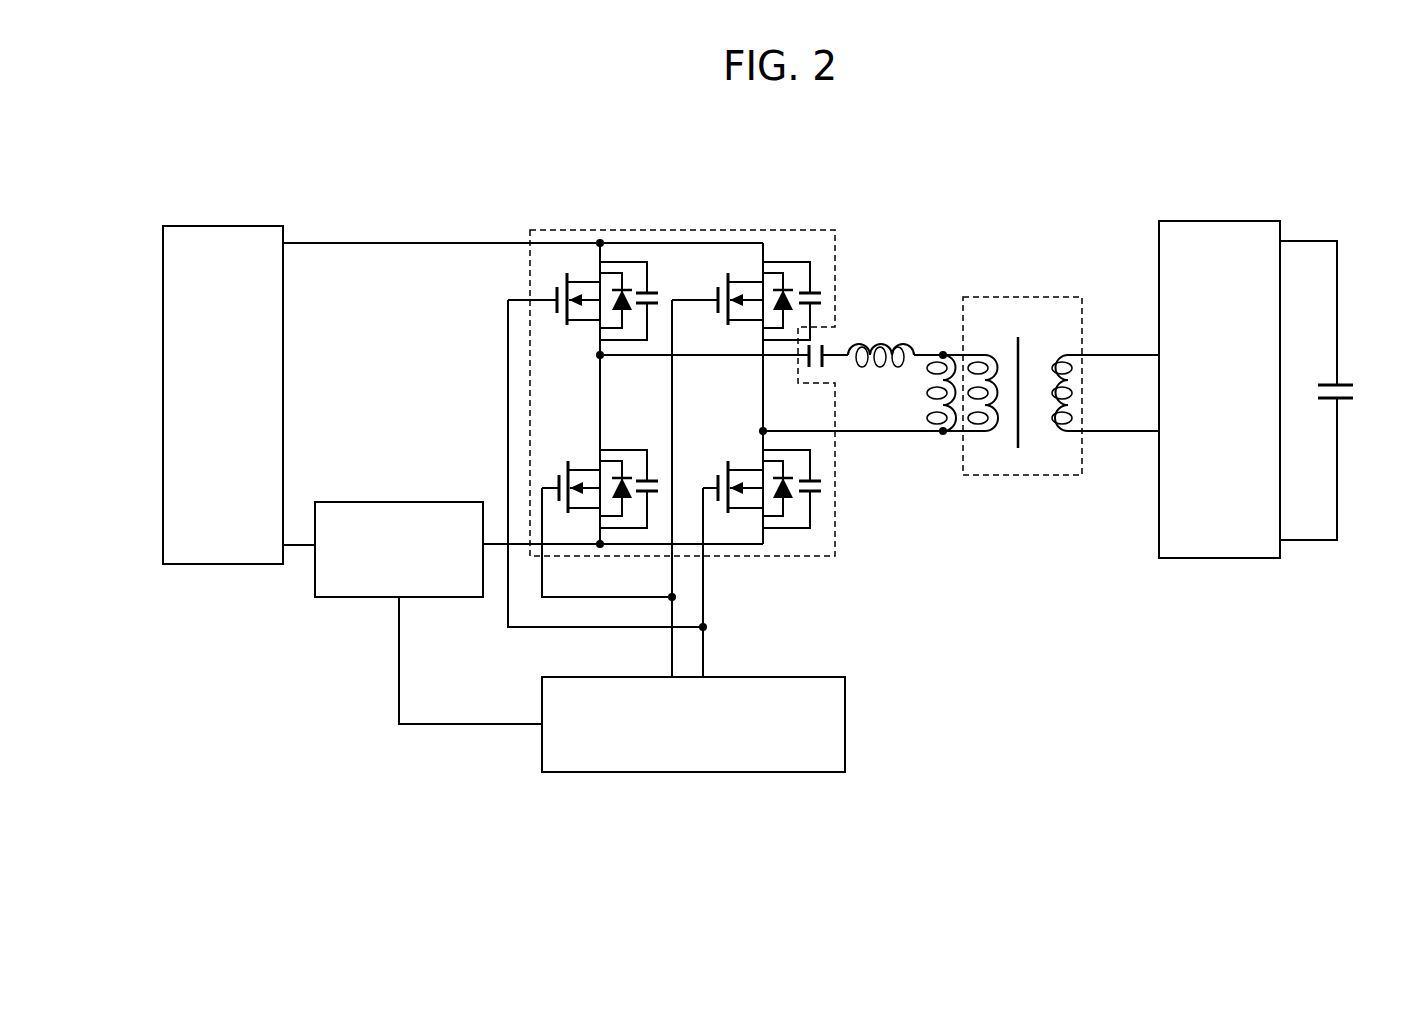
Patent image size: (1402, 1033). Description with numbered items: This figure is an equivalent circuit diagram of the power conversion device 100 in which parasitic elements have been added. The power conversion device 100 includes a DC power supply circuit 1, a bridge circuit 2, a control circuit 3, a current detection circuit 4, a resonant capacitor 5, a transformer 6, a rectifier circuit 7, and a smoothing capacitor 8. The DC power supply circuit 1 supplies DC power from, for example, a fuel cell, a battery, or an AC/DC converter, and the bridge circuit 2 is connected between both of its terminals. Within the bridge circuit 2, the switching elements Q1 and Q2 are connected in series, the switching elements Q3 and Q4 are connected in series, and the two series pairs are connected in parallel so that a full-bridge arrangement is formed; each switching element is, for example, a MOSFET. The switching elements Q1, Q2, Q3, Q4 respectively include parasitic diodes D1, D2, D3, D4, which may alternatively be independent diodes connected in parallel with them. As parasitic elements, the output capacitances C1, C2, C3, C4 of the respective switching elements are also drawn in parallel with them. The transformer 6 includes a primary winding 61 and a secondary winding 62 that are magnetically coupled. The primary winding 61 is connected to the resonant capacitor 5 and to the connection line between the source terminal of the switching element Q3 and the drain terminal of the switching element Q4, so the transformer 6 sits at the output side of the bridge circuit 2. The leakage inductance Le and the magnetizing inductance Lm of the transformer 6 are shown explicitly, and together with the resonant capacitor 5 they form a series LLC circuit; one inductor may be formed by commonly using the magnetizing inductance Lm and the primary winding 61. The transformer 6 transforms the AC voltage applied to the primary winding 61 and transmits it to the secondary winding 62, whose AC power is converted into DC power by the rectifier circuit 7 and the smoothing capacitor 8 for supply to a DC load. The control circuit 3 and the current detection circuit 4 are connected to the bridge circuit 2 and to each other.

The DC power supply circuit 1 is at (222, 226).
The bridge circuit 2 is at (735, 557).
The control circuit 3 is at (763, 677).
The current detection circuit 4 is at (399, 502).
The resonant capacitor 5 is at (823, 352).
The transformer 6 is at (1012, 356).
The primary winding 61 is at (985, 355).
The secondary winding 62 is at (1064, 355).
The rectifier circuit 7 is at (1223, 221).
The smoothing capacitor 8 is at (1346, 383).
The power conversion device 100 is at (1061, 690).
The switching element Q1 is at (554, 309).
The switching element Q2 is at (569, 480).
The switching element Q3 is at (717, 292).
The switching element Q4 is at (730, 480).
The parasitic diode D1 is at (623, 288).
The parasitic diode D2 is at (623, 476).
The parasitic diode D3 is at (784, 288).
The parasitic diode D4 is at (786, 500).
The output capacitance C1 is at (651, 291).
The output capacitance C2 is at (650, 479).
The output capacitance C3 is at (813, 291).
The output capacitance C4 is at (822, 476).
The leakage inductance Le is at (895, 342).
The magnetizing inductance Lm is at (925, 393).